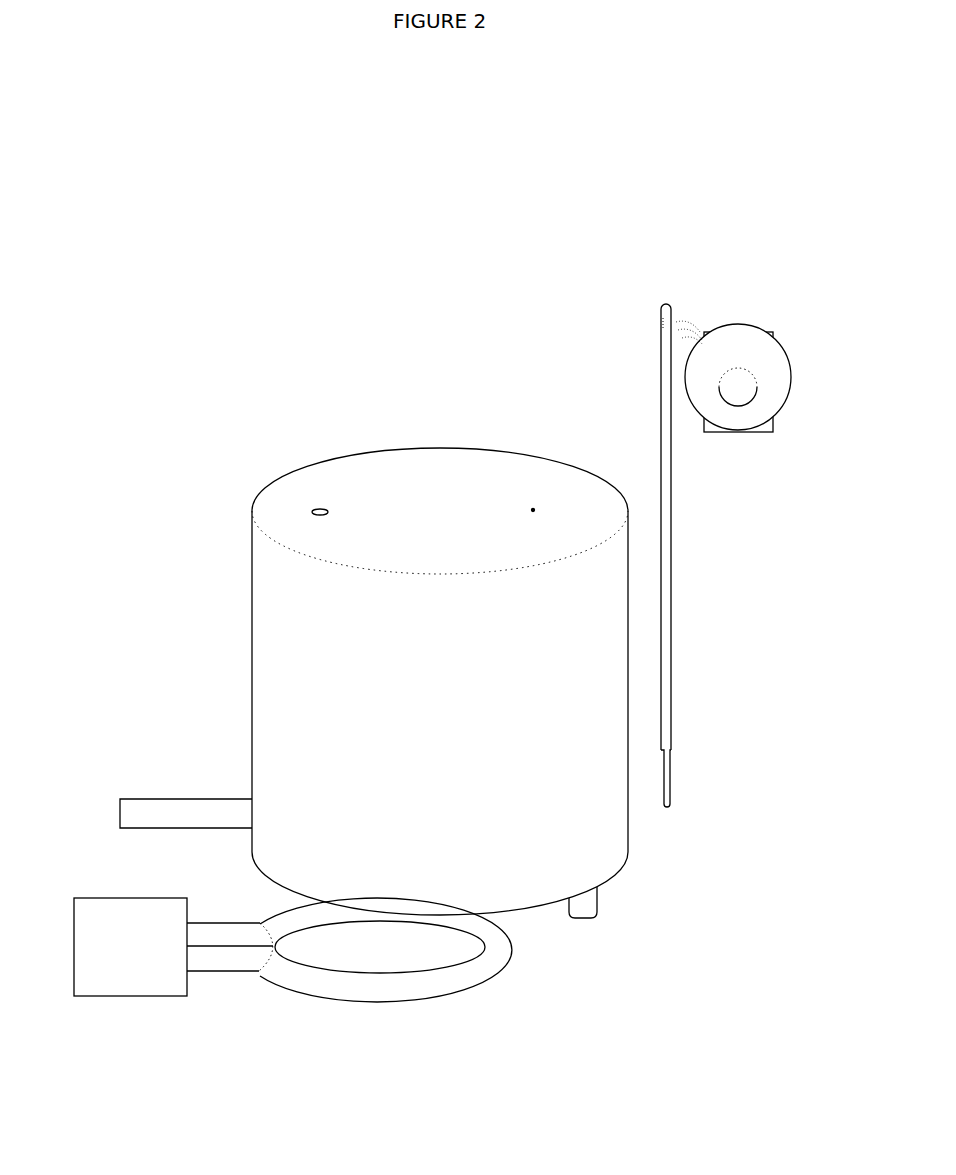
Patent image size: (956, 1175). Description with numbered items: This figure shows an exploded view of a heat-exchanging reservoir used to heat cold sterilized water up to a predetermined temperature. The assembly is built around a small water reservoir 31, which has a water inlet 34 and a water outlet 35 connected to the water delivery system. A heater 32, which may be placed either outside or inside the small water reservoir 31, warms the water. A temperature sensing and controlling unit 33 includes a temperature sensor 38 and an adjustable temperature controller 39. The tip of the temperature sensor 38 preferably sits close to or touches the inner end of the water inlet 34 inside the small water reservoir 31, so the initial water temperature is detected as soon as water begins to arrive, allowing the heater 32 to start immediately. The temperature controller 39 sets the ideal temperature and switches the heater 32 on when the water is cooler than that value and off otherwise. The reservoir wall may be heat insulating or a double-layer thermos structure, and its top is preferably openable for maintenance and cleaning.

The small water reservoir 31 is at (401, 681).
The heater 32 is at (293, 974).
The temperature sensing and controlling unit 33 is at (679, 525).
The water inlet 34 is at (186, 784).
The water outlet 35 is at (631, 920).
The temperature sensor 38 is at (619, 555).
The adjustable temperature controller 39 is at (733, 337).